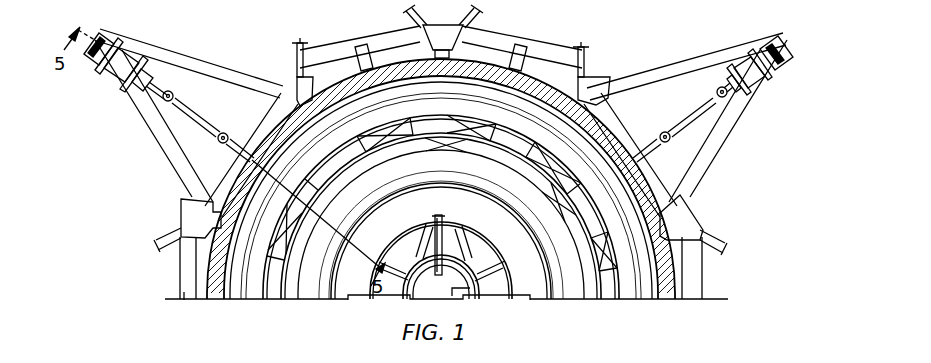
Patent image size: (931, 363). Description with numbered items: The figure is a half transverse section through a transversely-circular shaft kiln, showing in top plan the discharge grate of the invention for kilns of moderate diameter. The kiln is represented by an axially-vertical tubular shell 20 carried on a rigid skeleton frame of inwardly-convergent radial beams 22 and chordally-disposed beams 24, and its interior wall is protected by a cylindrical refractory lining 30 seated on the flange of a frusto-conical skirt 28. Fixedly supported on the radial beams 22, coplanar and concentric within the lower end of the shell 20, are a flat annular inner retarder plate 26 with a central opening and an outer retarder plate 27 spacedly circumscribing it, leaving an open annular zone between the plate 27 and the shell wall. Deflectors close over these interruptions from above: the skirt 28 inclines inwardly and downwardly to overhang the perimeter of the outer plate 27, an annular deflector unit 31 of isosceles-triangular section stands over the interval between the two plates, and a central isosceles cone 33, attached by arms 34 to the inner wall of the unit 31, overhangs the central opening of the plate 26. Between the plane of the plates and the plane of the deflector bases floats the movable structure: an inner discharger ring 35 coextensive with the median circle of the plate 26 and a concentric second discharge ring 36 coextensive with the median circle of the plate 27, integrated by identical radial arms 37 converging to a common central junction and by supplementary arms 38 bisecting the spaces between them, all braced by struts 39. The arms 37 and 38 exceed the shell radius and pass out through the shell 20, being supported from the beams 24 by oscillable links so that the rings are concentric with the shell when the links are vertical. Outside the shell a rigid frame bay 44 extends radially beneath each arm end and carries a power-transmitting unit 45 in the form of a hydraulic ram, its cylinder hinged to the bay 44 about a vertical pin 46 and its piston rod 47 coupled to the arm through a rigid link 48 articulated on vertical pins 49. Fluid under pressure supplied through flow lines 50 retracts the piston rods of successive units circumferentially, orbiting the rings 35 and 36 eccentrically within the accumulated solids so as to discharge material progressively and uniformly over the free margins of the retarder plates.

The tubular shell 20 is at (212, 270).
The radial beams 22 is at (206, 221).
The chordally-disposed beams 24 is at (216, 172).
The inner retarder plate 26 is at (456, 214).
The outer retarder plate 27 is at (478, 145).
The frusto-conical skirt 28 is at (375, 106).
The refractory lining 30 is at (218, 290).
The annular deflector unit 31 is at (400, 199).
The isosceles cone 33 is at (440, 280).
The arms 34 is at (472, 293).
The inner discharger ring 35 is at (503, 296).
The second discharge ring 36 is at (545, 140).
The arms 37 is at (410, 240).
The arms 38 is at (383, 114).
The struts 39 is at (441, 116).
The rigid frame bay 44 is at (294, 78).
The power-transmitting unit 45 is at (140, 48).
The pin 46 is at (100, 66).
The piston rod 47 is at (156, 90).
The rigid link 48 is at (198, 118).
The pins 49 is at (174, 97).
The flow lines 50 is at (128, 31).